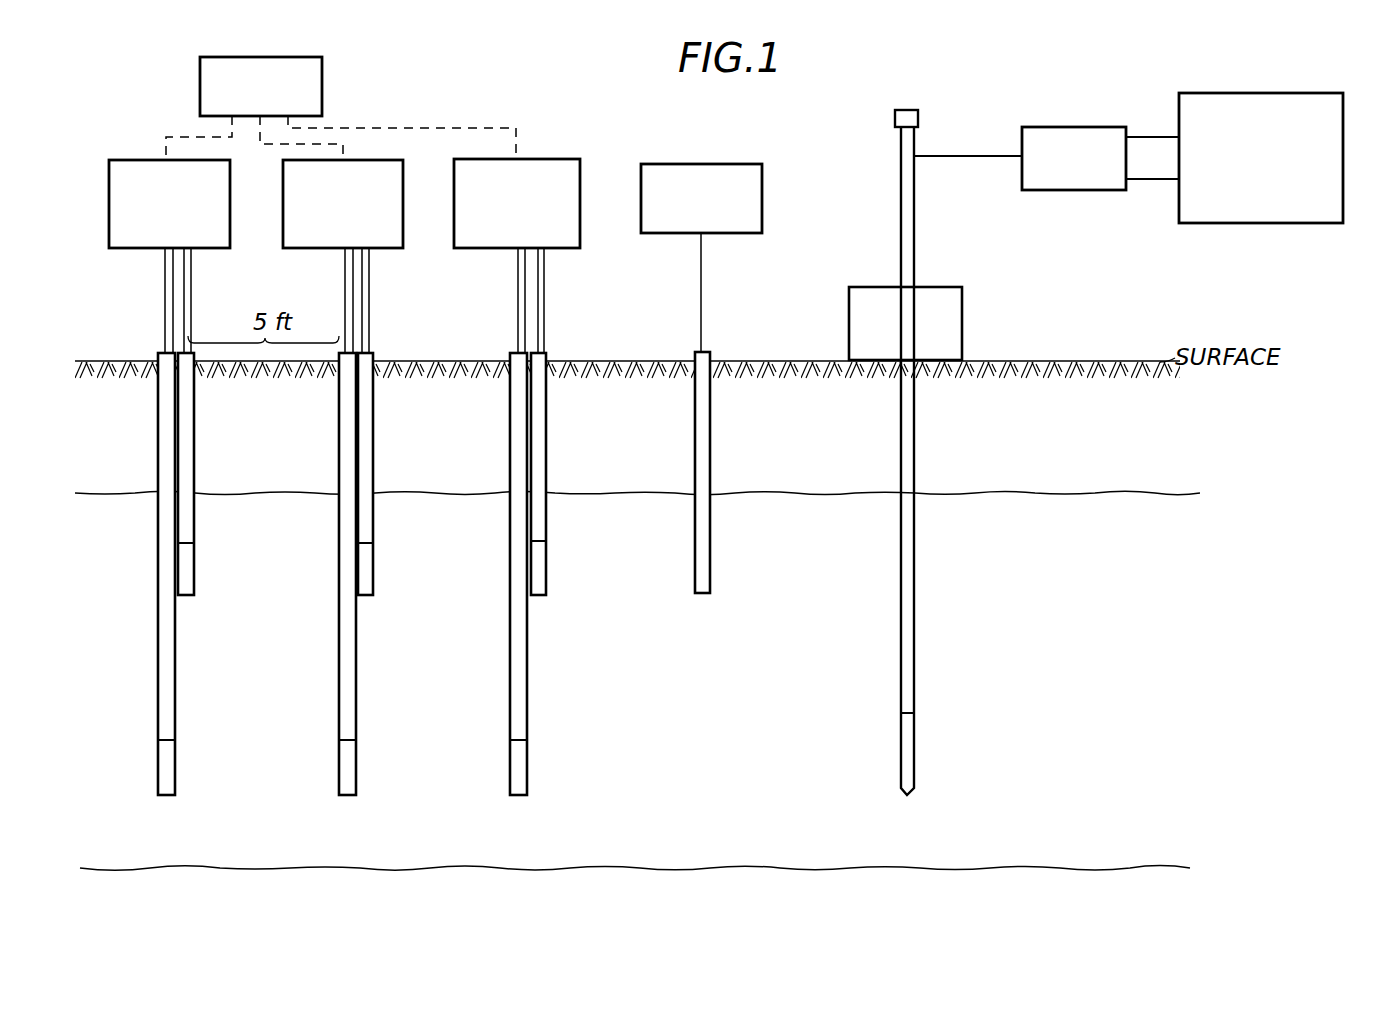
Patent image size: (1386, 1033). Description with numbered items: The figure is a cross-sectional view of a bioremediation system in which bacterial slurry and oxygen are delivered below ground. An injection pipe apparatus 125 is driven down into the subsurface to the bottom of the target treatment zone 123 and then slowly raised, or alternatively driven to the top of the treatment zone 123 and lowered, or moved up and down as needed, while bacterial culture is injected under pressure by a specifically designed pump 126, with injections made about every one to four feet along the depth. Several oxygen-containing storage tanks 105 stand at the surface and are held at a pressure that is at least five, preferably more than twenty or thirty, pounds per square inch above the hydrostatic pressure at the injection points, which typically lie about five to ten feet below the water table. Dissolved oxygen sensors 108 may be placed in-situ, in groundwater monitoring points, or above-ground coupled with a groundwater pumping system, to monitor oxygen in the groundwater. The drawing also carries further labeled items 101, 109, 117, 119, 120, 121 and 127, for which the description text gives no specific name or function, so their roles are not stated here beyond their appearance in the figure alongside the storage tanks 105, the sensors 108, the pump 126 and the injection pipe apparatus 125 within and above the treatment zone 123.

The oxygen sensor probe 101 is at (710, 440).
The oxygen-containing storage tank 105 is at (212, 249).
The dissolved oxygen sensor 108 is at (740, 234).
The oxygen injection well 109 is at (559, 594).
The vadose (unsaturated) zone 117 is at (1300, 492).
The control unit 119 is at (322, 82).
The well screen 120 is at (194, 570).
The injection well 121 is at (328, 740).
The target treatment zone 123 is at (1300, 788).
The injection pipe apparatus 125 is at (925, 622).
The pump 126 is at (1076, 192).
The bacterial slurry storage tank 127 is at (1280, 224).